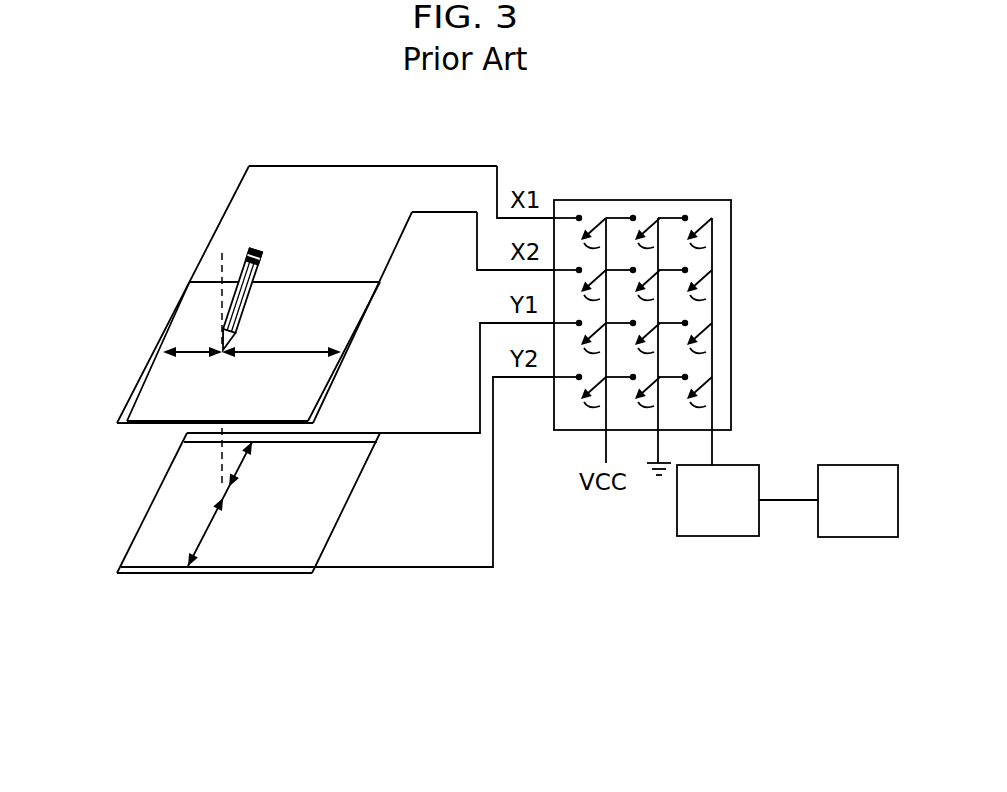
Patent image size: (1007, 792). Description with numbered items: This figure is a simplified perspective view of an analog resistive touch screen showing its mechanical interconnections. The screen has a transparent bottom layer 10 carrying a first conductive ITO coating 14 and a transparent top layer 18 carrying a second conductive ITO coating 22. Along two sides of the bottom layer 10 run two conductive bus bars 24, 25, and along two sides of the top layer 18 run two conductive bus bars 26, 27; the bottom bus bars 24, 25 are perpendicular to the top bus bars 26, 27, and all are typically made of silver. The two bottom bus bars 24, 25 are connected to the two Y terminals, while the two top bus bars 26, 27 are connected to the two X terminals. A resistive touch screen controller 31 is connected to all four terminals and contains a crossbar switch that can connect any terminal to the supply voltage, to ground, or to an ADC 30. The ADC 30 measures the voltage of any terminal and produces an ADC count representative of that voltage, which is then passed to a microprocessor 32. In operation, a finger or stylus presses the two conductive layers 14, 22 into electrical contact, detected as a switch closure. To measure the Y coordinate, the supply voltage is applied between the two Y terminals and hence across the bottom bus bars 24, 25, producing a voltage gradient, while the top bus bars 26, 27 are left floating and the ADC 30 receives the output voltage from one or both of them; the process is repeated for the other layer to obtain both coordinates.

The bottom layer 10 is at (112, 547).
The first conductive ITO coating 14 is at (302, 546).
The top layer 18 is at (166, 256).
The second conductive ITO coating 22 is at (292, 307).
The bottom bus bar 24 is at (143, 573).
The bottom bus bar 25 is at (187, 447).
The top bus bar 26 is at (168, 320).
The top bus bar 27 is at (353, 333).
The ADC 30 is at (704, 529).
The resistive touch screen controller 31 is at (660, 208).
The microprocessor 32 is at (844, 529).